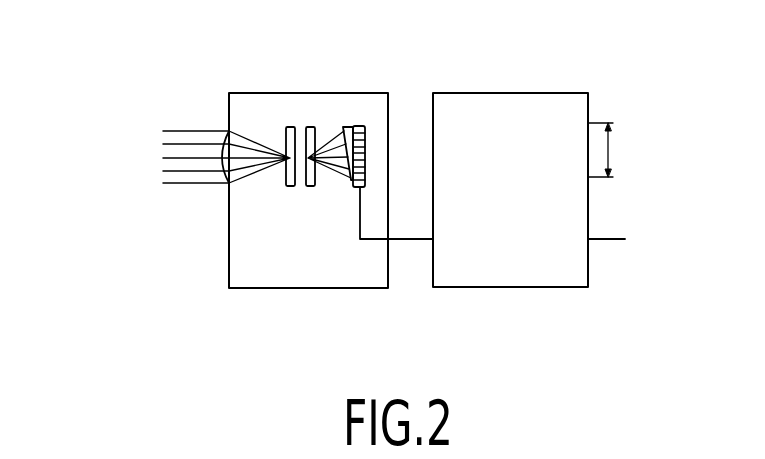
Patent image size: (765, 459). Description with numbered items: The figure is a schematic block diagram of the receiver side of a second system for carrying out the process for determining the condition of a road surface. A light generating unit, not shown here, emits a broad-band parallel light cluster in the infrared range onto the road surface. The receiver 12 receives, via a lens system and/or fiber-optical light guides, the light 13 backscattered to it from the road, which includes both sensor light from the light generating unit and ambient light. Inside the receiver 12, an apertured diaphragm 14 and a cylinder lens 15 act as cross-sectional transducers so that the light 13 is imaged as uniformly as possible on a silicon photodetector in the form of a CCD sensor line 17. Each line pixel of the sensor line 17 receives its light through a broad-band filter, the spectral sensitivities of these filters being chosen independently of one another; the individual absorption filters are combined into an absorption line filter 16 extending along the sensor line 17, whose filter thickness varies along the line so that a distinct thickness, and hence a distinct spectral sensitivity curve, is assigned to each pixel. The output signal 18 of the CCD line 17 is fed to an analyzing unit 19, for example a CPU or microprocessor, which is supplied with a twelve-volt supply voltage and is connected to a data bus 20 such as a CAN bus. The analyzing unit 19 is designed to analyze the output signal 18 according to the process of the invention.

The receiver 12 is at (288, 88).
The light 13 is at (200, 187).
The apertured diaphragm 14 is at (291, 187).
The cylinder lens 15 is at (311, 187).
The absorption line filter 16 is at (347, 127).
The CCD sensor line 17 is at (356, 125).
The output signal 18 is at (412, 241).
The analyzing unit 19 is at (517, 288).
The data bus 20 is at (616, 241).